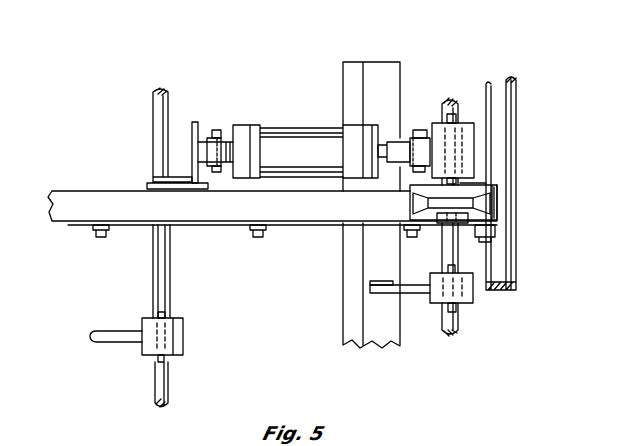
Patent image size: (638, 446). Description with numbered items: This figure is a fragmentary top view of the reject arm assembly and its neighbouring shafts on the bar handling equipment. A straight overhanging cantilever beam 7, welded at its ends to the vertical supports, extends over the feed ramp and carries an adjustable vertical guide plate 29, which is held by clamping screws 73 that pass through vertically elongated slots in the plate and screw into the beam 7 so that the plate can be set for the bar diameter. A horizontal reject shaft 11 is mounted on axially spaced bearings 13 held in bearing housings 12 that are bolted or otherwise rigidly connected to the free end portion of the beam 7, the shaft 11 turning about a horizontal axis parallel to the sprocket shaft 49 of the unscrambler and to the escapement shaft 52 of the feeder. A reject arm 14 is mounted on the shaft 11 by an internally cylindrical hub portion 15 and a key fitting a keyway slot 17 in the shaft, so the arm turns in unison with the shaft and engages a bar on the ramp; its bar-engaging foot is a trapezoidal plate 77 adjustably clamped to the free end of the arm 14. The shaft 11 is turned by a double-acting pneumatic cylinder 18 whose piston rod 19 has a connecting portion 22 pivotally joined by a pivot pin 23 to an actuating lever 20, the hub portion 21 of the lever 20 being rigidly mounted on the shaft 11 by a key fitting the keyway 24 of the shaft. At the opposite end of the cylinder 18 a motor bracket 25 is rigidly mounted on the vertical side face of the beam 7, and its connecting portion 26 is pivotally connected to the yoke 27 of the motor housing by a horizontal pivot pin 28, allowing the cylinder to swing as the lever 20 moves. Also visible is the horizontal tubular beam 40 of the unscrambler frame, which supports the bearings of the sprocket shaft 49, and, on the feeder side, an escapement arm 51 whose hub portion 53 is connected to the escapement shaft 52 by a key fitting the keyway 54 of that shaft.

The cantilever beam 7 is at (98, 195).
The horizontal tubular beam 40 is at (350, 63).
The motor bracket 25 is at (190, 130).
The connecting portion 26 is at (216, 132).
The horizontal pivot pin 28 is at (218, 131).
The yoke 27 is at (228, 172).
The double-acting pneumatic cylinder 18 is at (311, 161).
The piston rod 19 is at (396, 141).
The connecting portion 22 is at (400, 155).
The pivot pin 23 is at (421, 129).
The actuating lever 20 is at (412, 172).
The reject shaft 11 is at (455, 100).
The keyway 24 is at (462, 122).
The hub portion 21 is at (470, 156).
The bearing housing 12 is at (480, 204).
The bearing 13 is at (452, 224).
The sprocket shaft 49 is at (513, 93).
The hub portion 15 is at (474, 292).
The keyway slot 17 is at (460, 308).
The reject arm 14 is at (417, 294).
The trapezoidal plate 77 is at (371, 283).
The clamping screw 73 is at (98, 238).
The vertical guide plate 29 is at (185, 227).
The hub portion 53 is at (183, 338).
The keyway 54 is at (165, 317).
The escapement arm 51 is at (123, 333).
The escapement shaft 52 is at (170, 386).